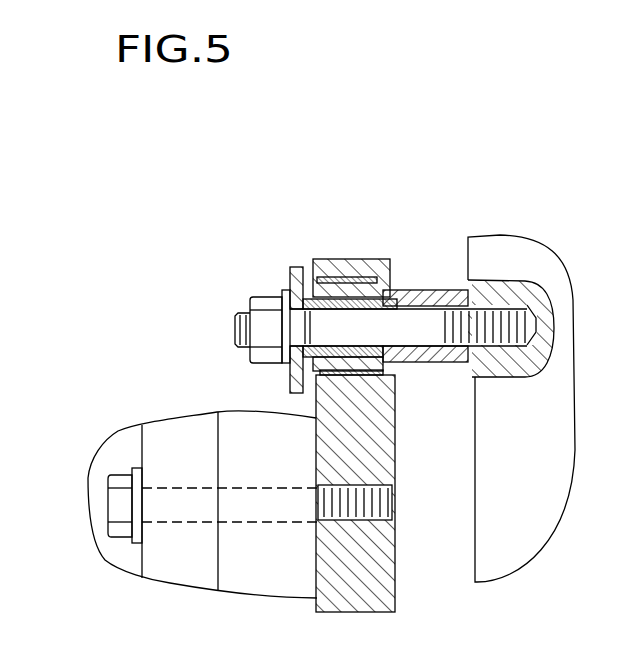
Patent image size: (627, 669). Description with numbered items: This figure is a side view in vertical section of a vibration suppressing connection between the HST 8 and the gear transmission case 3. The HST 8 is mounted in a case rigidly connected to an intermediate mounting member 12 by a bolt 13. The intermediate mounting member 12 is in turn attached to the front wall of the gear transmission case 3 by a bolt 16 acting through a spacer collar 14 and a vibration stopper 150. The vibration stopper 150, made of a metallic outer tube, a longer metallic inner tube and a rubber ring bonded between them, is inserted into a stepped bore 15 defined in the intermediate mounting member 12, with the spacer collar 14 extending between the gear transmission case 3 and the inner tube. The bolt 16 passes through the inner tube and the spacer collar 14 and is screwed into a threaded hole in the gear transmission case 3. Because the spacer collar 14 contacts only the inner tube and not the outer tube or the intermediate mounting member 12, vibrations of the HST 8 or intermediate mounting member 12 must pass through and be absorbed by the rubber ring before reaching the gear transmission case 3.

The gear transmission case 3 is at (487, 560).
The HST 8 is at (165, 433).
The intermediate mounting member 12 is at (385, 538).
The bolt 13 is at (120, 472).
The spacer collar 14 is at (442, 290).
The stepped bore 15 is at (312, 280).
The bolt 16 is at (237, 345).
The vibration stopper 150 is at (352, 380).